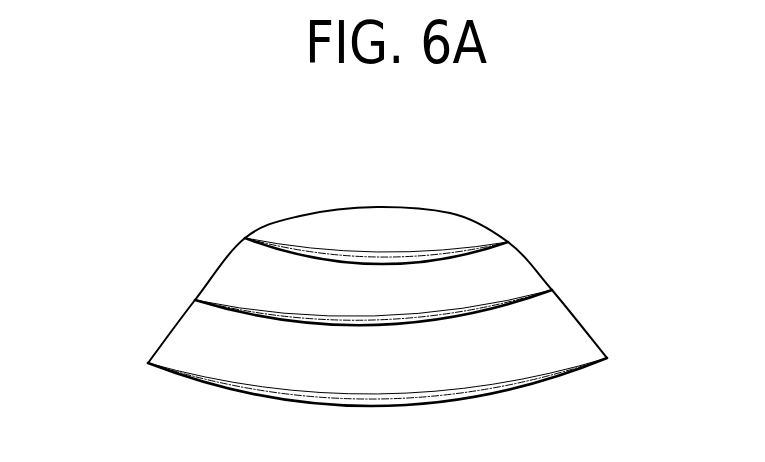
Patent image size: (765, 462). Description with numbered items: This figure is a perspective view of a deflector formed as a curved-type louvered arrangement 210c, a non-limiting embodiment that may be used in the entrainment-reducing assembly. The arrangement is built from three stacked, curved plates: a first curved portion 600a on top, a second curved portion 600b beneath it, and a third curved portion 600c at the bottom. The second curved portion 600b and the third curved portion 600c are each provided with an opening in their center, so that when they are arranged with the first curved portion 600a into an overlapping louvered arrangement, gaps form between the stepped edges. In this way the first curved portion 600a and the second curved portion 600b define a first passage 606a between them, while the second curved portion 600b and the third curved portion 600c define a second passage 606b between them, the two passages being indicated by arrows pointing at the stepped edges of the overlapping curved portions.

The curved-type louvered arrangement 210c is at (150, 155).
The first curved portion 600a is at (327, 230).
The second curved portion 600b is at (257, 282).
The third curved portion 600c is at (222, 355).
The first passage 606a is at (528, 252).
The second passage 606b is at (570, 308).